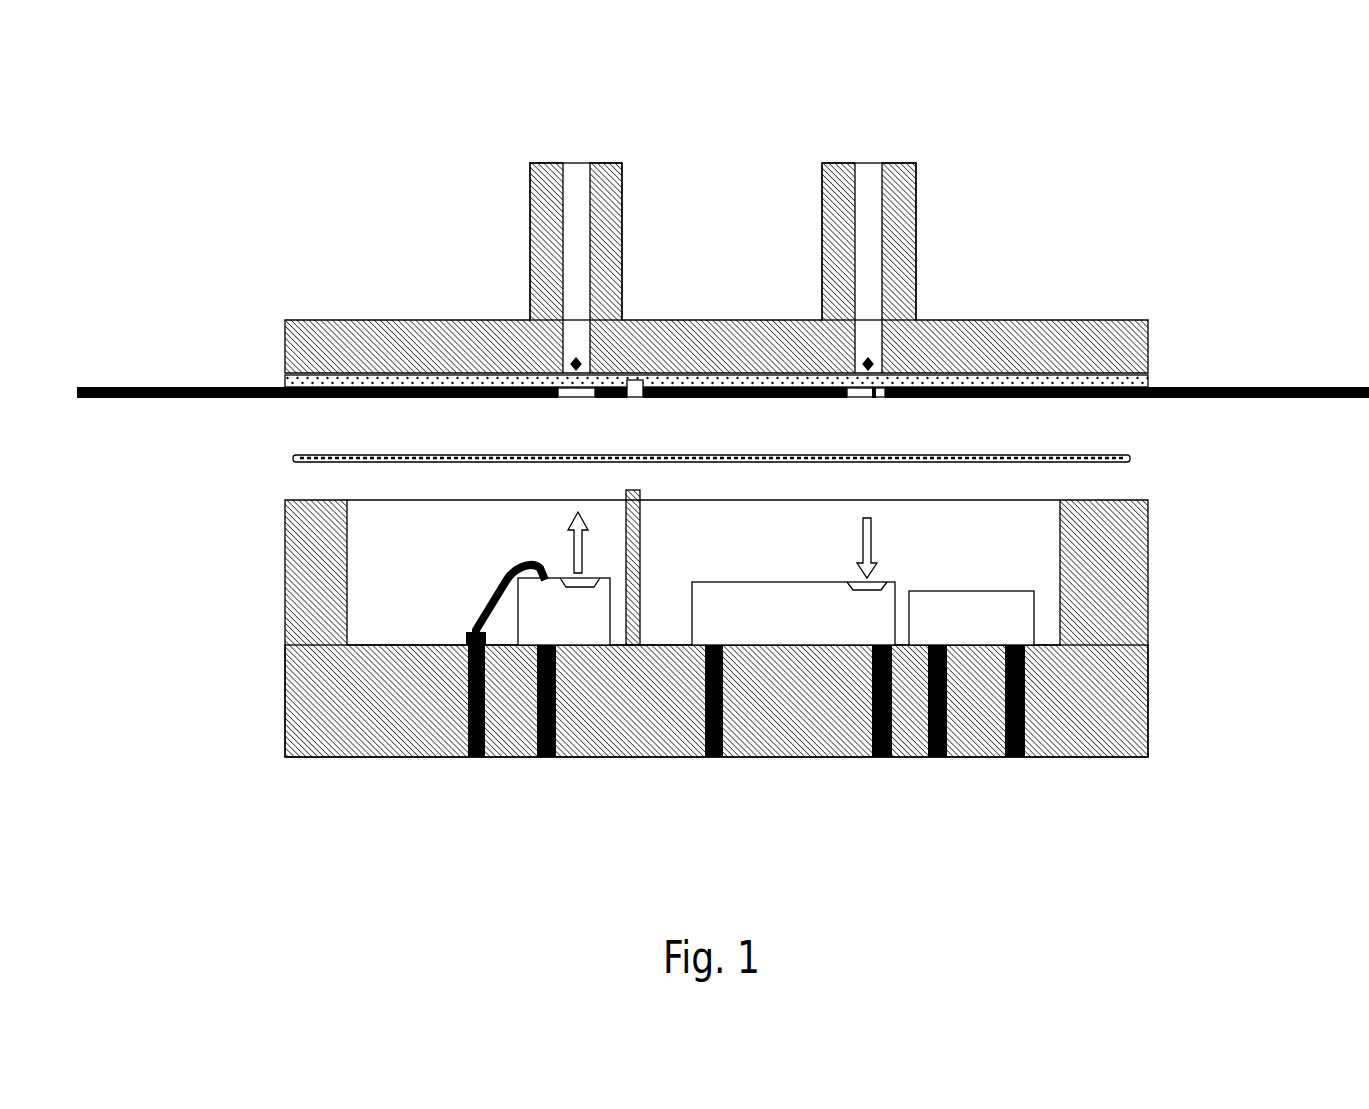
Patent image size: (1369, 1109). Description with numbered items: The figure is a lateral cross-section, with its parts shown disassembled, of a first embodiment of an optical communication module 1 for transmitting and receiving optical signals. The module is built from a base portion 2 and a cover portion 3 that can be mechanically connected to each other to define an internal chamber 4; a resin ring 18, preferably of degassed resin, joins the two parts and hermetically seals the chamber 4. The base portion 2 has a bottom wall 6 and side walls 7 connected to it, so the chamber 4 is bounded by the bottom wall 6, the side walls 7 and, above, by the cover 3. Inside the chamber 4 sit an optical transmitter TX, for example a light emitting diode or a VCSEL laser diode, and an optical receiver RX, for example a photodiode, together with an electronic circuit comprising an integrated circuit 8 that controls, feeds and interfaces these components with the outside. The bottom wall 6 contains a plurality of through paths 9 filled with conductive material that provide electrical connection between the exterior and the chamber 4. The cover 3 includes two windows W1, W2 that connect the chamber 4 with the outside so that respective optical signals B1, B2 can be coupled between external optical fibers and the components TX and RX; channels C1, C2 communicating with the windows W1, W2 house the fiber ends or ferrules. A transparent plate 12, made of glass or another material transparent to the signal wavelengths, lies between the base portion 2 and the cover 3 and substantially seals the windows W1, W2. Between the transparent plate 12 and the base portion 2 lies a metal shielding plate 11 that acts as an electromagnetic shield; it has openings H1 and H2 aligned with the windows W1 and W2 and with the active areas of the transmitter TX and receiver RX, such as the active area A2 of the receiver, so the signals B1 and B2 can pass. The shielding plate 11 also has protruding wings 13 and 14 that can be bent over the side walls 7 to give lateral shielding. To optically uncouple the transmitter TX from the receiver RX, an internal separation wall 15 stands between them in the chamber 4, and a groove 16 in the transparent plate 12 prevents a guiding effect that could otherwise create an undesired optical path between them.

The optical module 1 is at (80, 130).
The base portion 2 is at (178, 688).
The cover portion 3 is at (406, 242).
The chamber 4 is at (392, 542).
The bottom wall 6 is at (408, 708).
The side walls 7 is at (315, 560).
The integrated circuit 8 is at (977, 610).
The through paths 9 is at (543, 757).
The shielding plate 11 is at (1016, 402).
The transparent plate 12 is at (290, 378).
The protruding wing 13 is at (150, 399).
The protruding wing 14 is at (1228, 399).
The internal separation wall 15 is at (642, 525).
The groove 16 is at (642, 404).
The resin ring 18 is at (347, 458).
The channel C1 is at (580, 212).
The channel C2 is at (870, 207).
The window W1 is at (576, 362).
The window W2 is at (868, 362).
The opening H1 is at (578, 400).
The opening H2 is at (866, 396).
The optical transmitter TX is at (562, 610).
The optical receiver RX is at (757, 610).
The active area A2 is at (872, 592).
The optical signal B1 is at (572, 548).
The optical signal B2 is at (872, 525).